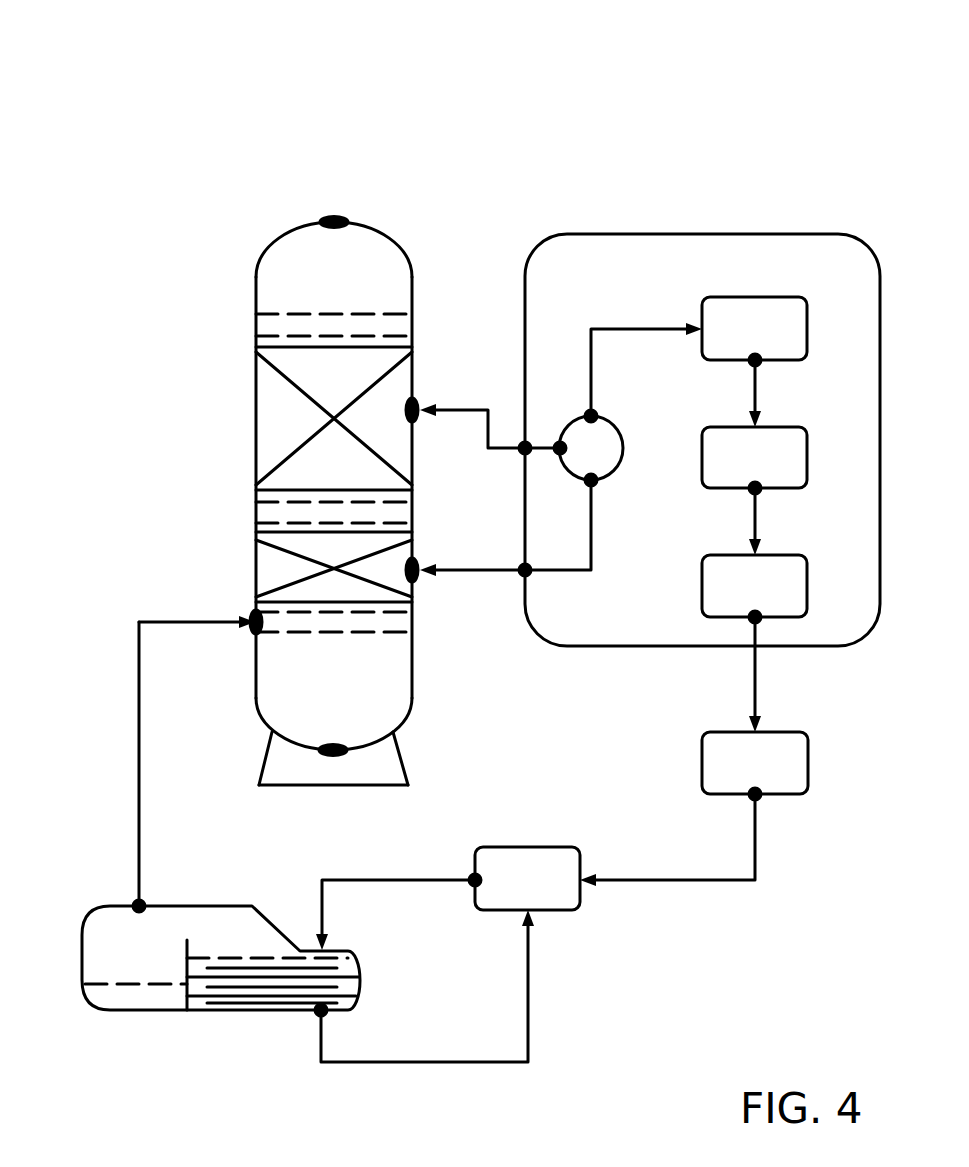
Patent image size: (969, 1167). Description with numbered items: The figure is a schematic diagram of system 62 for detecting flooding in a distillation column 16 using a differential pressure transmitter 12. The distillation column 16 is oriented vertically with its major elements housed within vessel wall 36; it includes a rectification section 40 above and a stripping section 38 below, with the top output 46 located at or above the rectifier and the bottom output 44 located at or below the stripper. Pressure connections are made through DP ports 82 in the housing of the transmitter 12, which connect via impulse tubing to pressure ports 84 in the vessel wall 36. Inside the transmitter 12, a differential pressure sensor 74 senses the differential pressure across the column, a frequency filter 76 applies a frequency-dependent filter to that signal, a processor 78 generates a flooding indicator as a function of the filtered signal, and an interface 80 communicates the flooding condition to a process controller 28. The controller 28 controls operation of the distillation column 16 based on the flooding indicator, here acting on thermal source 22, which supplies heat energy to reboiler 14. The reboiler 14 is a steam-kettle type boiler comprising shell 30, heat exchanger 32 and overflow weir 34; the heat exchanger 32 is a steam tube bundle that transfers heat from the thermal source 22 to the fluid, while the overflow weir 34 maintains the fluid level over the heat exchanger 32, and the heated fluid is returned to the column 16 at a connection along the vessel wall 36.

The system 62 is at (109, 73).
The distillation column 16 is at (270, 174).
The vessel wall 36 is at (260, 258).
The top output 46 is at (337, 218).
The rectification section 40 is at (255, 418).
The stripping section 38 is at (256, 566).
The bottom output 44 is at (328, 742).
The pressure ports 84 is at (419, 400).
The DP ports 82 is at (520, 456).
The differential pressure transmitter 12 is at (812, 233).
The differential pressure sensor 74 is at (606, 420).
The frequency filter 76 is at (790, 296).
The processor 78 is at (790, 426).
The interface 80 is at (790, 554).
The controller 28 is at (735, 731).
The thermal source 22 is at (505, 846).
The reboiler 14 is at (196, 870).
The shell 30 is at (126, 903).
The overflow weir 34 is at (167, 960).
The heat exchanger 32 is at (338, 948).